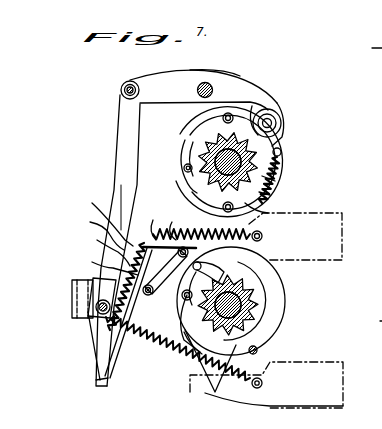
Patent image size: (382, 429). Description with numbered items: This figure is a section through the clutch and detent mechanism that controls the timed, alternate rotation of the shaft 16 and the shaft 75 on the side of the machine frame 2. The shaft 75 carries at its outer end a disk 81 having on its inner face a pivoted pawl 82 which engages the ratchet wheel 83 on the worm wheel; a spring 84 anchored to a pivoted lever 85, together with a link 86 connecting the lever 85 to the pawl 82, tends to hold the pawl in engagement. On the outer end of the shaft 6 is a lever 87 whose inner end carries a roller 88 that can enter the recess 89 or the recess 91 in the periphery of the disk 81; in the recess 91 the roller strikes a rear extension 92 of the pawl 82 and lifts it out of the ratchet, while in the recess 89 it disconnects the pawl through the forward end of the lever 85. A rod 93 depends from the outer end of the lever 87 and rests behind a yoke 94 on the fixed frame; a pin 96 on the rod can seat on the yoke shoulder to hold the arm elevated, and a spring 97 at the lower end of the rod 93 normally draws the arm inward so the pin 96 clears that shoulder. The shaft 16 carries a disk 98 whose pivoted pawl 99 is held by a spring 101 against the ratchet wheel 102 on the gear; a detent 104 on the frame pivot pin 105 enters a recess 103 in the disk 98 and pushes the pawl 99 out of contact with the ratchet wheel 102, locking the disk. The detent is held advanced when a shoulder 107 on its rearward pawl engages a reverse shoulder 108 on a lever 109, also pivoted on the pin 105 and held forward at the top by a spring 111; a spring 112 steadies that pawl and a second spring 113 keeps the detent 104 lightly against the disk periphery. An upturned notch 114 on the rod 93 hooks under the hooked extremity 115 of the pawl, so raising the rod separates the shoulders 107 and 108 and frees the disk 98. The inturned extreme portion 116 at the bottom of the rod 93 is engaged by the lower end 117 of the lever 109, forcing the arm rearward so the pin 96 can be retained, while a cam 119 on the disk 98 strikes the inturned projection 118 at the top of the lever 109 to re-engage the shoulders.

The frame 2 is at (376, 323).
The shaft 6 is at (208, 83).
The shaft 16 is at (252, 290).
The shaft 75 is at (282, 148).
The disk 81 is at (270, 178).
The pivoted pawl 82 is at (201, 124).
The ratchet wheel 83 is at (281, 163).
The spring 84 is at (266, 192).
The pivoted lever 85 is at (245, 203).
The link 86 is at (177, 153).
The lever 87 is at (224, 75).
The roller 88 is at (273, 118).
The recess 89 is at (183, 172).
The recess 91 is at (283, 129).
The rear extension 92 is at (254, 110).
The rod 93 is at (120, 124).
The yoke 94 is at (72, 293).
The pin 96 is at (88, 313).
The spring 97 is at (176, 348).
The disk 98 is at (277, 321).
The pivoted pawl 99 is at (182, 304).
The spring 101 is at (268, 366).
The ratchet wheel 102 is at (237, 287).
The recess 103 is at (212, 268).
The detent 104 is at (185, 288).
The pivot pin 105 is at (119, 353).
The shoulder 107 is at (183, 234).
The reverse shoulder 108 is at (101, 251).
The lever 109 is at (186, 336).
The spring 111 is at (260, 227).
The spring 112 is at (106, 266).
The second spring 113 is at (155, 221).
The upturned notch 114 is at (105, 219).
The hooked extremity 115 is at (95, 233).
The inturned extreme portion 116 is at (88, 335).
The lower end 117 is at (112, 363).
The inturned projection 118 is at (173, 224).
The cam 119 is at (197, 380).